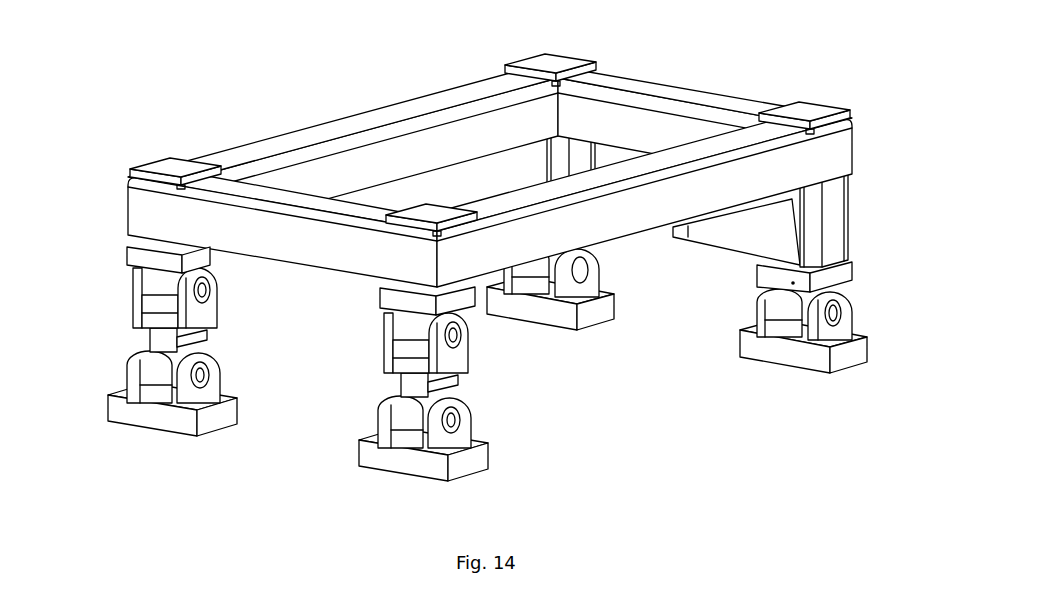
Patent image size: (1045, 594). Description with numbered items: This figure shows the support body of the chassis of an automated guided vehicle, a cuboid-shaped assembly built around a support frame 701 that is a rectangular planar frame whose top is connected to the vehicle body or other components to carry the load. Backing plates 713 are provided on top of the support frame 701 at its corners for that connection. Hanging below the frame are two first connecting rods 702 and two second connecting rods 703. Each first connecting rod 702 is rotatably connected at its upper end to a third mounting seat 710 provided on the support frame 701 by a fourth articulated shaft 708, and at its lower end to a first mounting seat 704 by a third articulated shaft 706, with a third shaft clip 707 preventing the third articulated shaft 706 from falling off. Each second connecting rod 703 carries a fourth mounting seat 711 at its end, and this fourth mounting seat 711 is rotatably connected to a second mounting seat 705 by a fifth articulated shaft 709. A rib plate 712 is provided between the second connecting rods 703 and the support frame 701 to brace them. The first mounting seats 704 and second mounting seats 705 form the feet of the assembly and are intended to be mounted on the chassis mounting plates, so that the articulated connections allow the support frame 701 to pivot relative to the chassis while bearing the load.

The support frame 701 is at (833, 150).
The first connecting rod 702 is at (404, 393).
The second connecting rod 703 is at (838, 207).
The first mounting seat 704 is at (365, 457).
The second mounting seat 705 is at (740, 335).
The third articulated shaft 706 is at (456, 421).
The third shaft clip 707 is at (452, 434).
The fourth articulated shaft 708 is at (461, 335).
The fifth articulated shaft 709 is at (657, 271).
The third mounting seat 710 is at (158, 258).
The fourth mounting seat 711 is at (836, 312).
The rib plate 712 is at (778, 230).
The backing plate 713 is at (825, 103).